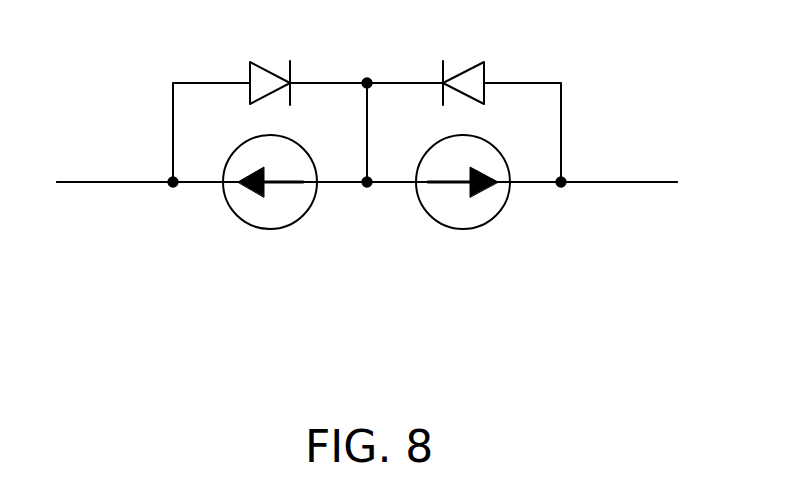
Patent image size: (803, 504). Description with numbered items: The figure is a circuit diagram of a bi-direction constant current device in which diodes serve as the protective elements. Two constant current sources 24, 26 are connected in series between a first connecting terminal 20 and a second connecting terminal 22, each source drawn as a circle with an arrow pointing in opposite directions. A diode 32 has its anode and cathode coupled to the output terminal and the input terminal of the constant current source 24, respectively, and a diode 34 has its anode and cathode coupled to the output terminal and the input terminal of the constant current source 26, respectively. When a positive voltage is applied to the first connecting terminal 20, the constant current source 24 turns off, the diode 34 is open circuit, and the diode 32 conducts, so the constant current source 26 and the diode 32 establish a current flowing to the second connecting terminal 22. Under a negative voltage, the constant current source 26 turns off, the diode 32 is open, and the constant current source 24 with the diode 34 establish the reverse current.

The first connecting terminal 20 is at (118, 184).
The second connecting terminal 22 is at (610, 184).
The constant current source 24 is at (270, 229).
The constant current source 26 is at (462, 229).
The diode 32 is at (266, 67).
The diode 34 is at (460, 67).